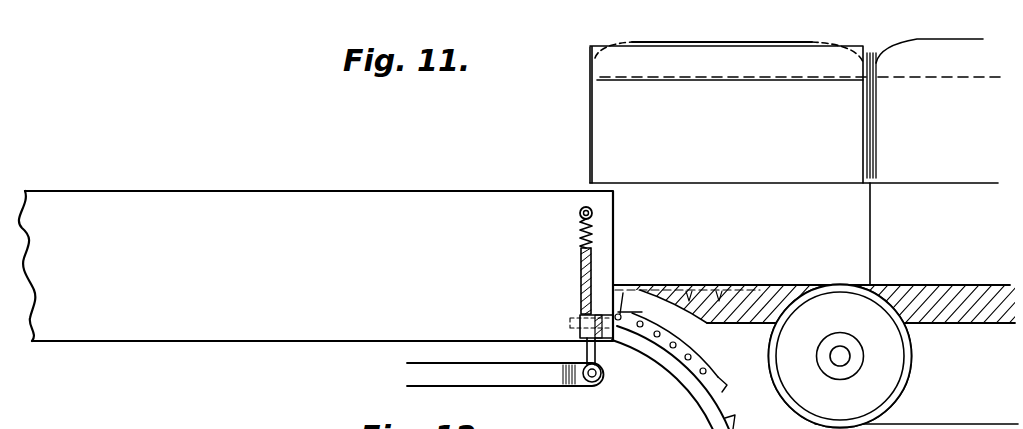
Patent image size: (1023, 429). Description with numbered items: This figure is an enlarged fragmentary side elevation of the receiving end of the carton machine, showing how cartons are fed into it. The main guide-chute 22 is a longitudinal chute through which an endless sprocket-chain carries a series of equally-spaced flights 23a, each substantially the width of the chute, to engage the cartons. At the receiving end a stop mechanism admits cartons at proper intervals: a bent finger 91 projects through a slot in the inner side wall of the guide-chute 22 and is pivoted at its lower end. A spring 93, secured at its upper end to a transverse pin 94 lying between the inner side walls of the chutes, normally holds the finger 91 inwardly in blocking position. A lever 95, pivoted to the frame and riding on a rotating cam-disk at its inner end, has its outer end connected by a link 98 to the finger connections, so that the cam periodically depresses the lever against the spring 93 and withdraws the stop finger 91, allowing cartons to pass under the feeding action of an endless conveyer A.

The guide-chute 22 is at (316, 266).
The transverse pin 94 is at (582, 208).
The spring 93 is at (578, 238).
The bent finger 91 is at (579, 257).
The flight 23a is at (640, 287).
The link 98 is at (597, 350).
The lever 95 is at (522, 378).
The endless conveyer A is at (983, 287).